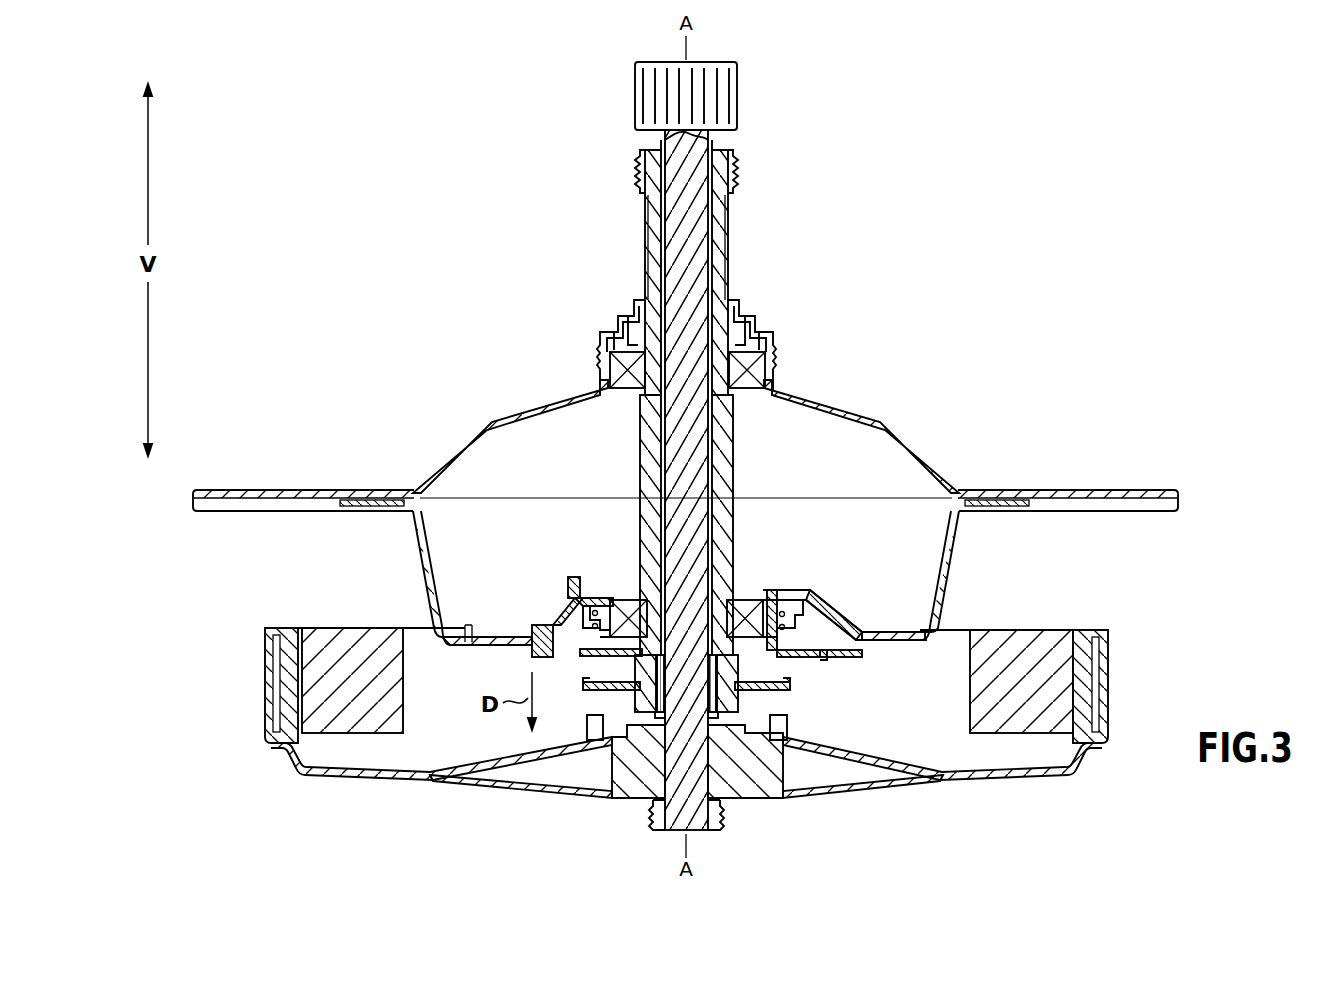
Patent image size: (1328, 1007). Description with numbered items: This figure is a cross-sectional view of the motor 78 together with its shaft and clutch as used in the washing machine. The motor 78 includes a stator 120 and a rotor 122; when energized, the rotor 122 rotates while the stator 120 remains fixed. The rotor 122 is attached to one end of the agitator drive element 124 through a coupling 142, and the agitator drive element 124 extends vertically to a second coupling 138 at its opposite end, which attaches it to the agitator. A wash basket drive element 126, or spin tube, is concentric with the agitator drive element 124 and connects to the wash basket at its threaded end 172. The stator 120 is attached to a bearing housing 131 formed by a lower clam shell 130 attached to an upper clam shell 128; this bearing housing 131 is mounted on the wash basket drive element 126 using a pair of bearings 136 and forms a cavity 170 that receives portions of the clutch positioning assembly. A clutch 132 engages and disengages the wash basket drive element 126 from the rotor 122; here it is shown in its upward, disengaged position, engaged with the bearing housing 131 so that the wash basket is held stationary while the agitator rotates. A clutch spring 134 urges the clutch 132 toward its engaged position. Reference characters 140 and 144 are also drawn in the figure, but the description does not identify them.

The motor 78 is at (316, 797).
The stator 120 is at (990, 640).
The rotor 122 is at (1080, 742).
The agitator drive element 124 is at (692, 232).
The wash basket drive element 126 is at (722, 290).
The upper clam shell 128 is at (890, 432).
The lower clam shell 130 is at (425, 572).
The bearing housing 131 is at (1015, 500).
The clutch 132 is at (792, 686).
The clutch spring 134 is at (566, 640).
The bearings 136 is at (742, 380).
The coupling 138 is at (737, 80).
The support plate 140 is at (600, 660).
The coupling 142 is at (712, 812).
The hub flange 144 is at (606, 700).
The cavity 170 is at (500, 478).
The threaded end 172 is at (738, 162).